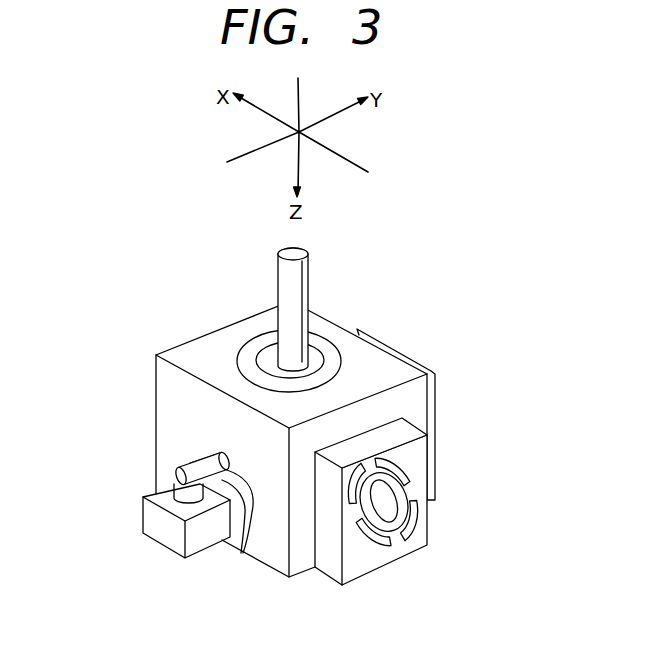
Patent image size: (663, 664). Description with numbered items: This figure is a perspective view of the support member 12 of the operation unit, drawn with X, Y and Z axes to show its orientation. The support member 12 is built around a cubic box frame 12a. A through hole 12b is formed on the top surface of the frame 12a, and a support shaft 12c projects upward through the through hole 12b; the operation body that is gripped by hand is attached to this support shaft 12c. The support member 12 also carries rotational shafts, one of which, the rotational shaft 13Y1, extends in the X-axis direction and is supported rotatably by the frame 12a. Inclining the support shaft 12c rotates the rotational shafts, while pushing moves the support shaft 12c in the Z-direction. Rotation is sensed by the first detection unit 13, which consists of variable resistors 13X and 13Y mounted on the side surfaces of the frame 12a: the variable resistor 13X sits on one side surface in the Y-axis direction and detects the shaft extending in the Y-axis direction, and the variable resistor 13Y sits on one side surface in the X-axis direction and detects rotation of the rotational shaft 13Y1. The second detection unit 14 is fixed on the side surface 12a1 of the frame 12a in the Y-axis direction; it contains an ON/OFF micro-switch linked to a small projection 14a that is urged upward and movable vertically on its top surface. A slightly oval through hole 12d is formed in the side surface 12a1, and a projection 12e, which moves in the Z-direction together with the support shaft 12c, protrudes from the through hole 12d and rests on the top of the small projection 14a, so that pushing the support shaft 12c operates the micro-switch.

The support member 12 is at (273, 433).
The cubic box frame 12a is at (193, 350).
The side surface 12a1 is at (172, 405).
The through hole 12b is at (323, 333).
The support shaft 12c is at (287, 290).
The through hole 12d is at (241, 553).
The projection 12e is at (195, 455).
The first detection unit 13 is at (436, 481).
The variable resistor 13X is at (435, 414).
The variable resistor 13Y is at (412, 550).
The rotational shaft 13Y1 is at (380, 503).
The second detection unit 14 is at (139, 503).
The small projection 14a is at (176, 470).